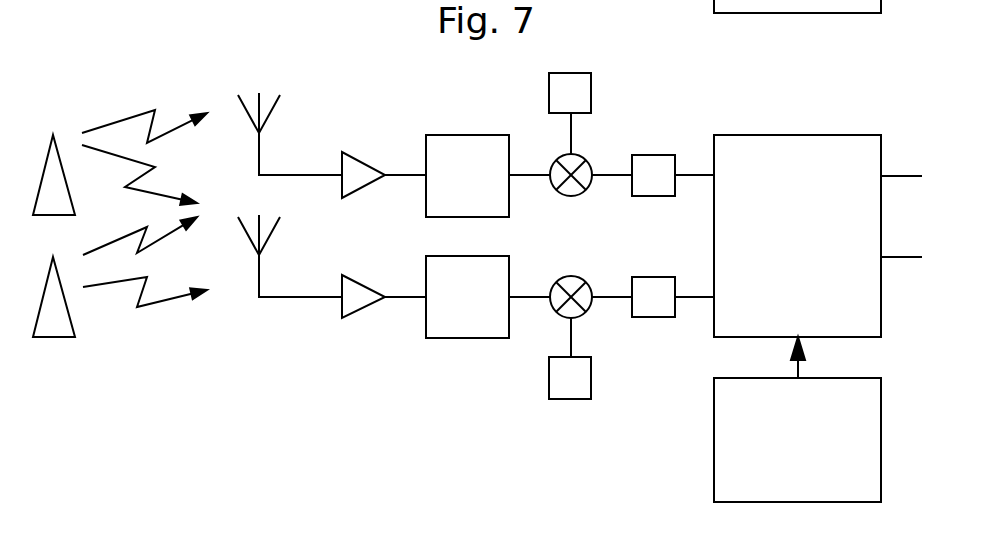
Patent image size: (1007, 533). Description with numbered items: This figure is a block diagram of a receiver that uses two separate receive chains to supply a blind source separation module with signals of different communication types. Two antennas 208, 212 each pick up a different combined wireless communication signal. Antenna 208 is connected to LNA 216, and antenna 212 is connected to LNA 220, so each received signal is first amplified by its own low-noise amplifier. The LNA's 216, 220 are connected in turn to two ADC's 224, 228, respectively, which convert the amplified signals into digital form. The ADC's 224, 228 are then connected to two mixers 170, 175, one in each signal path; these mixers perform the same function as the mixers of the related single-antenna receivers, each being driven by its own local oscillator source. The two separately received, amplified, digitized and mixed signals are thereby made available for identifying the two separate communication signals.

The antenna 208 is at (273, 110).
The antenna 212 is at (272, 232).
The LNA 216 is at (370, 172).
The LNA 220 is at (357, 313).
The ADC 224 is at (453, 135).
The ADC 228 is at (468, 338).
The mixer 170 is at (550, 167).
The mixer 175 is at (550, 307).